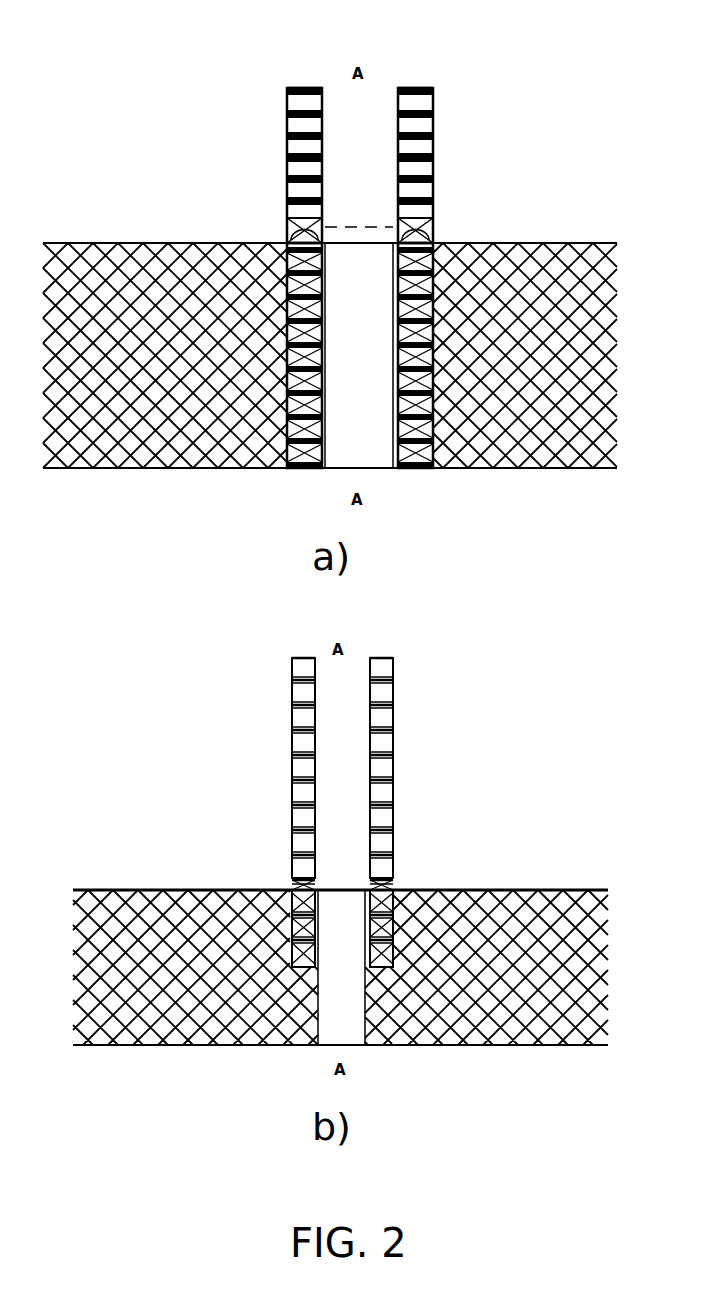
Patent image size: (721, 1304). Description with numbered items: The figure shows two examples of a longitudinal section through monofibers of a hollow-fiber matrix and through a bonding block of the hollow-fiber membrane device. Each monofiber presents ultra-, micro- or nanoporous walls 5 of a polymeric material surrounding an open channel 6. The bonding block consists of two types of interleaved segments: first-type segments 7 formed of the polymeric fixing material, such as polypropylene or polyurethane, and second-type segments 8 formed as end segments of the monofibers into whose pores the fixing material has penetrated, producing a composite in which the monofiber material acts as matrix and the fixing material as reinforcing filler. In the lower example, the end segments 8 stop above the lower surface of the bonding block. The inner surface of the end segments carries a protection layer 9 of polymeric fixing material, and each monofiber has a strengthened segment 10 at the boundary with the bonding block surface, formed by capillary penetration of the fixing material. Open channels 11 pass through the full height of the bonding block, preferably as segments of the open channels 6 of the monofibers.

The porous walls 5 is at (383, 743).
The open channel 6 is at (345, 668).
The first-type segments 7 is at (330, 644).
The second-type segments 8 is at (367, 965).
The protection layer 9 is at (292, 880).
The segment at the boundary with the bonding block surface 10 is at (392, 878).
The open channels 11 is at (343, 1025).